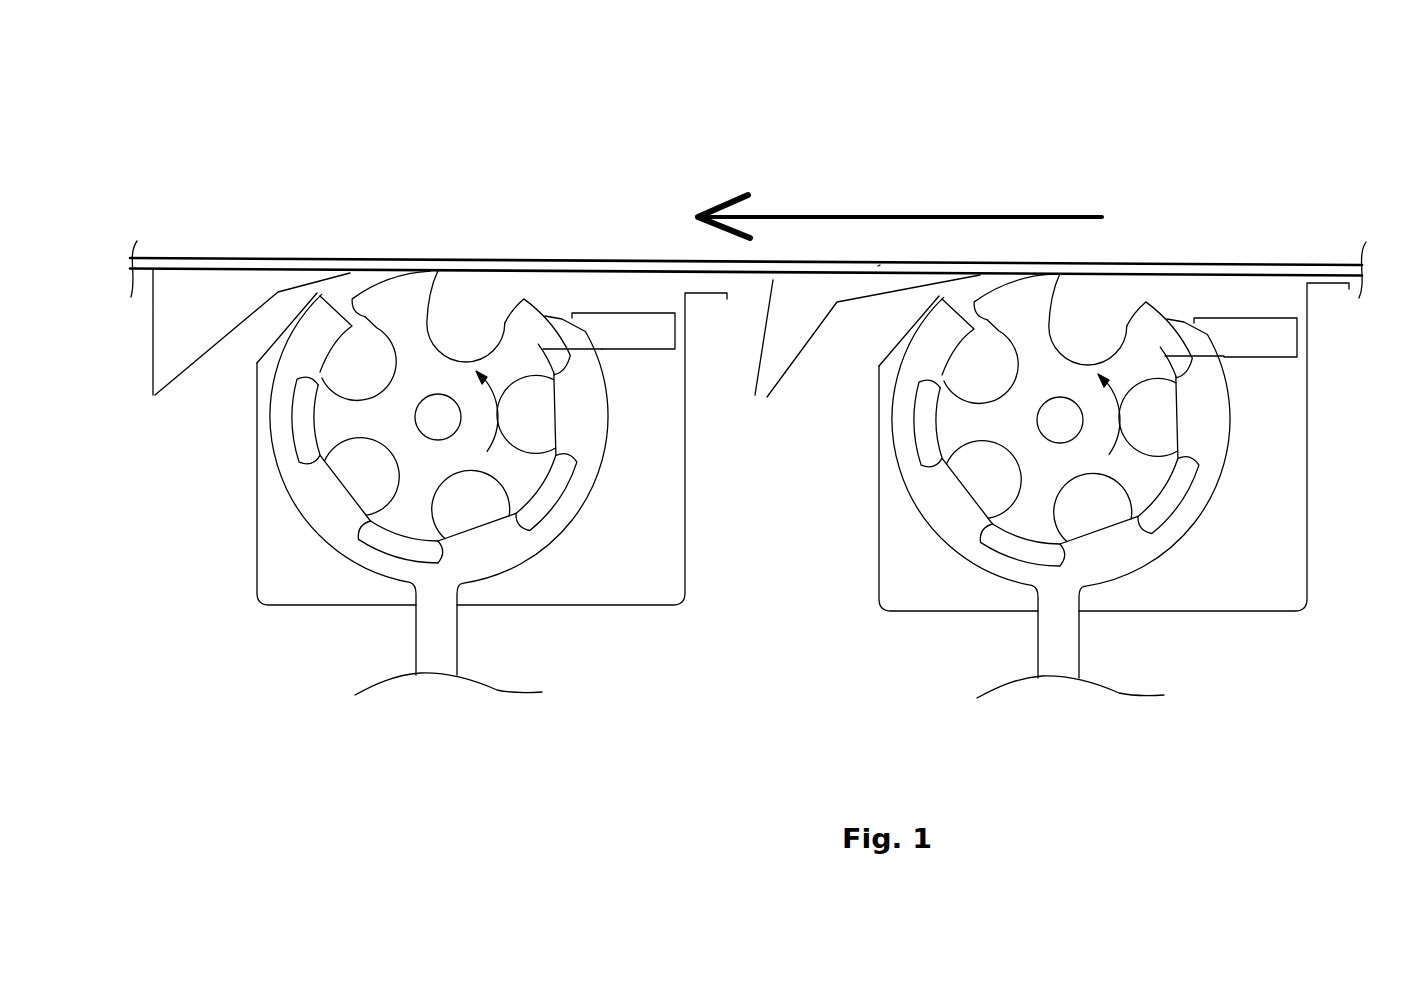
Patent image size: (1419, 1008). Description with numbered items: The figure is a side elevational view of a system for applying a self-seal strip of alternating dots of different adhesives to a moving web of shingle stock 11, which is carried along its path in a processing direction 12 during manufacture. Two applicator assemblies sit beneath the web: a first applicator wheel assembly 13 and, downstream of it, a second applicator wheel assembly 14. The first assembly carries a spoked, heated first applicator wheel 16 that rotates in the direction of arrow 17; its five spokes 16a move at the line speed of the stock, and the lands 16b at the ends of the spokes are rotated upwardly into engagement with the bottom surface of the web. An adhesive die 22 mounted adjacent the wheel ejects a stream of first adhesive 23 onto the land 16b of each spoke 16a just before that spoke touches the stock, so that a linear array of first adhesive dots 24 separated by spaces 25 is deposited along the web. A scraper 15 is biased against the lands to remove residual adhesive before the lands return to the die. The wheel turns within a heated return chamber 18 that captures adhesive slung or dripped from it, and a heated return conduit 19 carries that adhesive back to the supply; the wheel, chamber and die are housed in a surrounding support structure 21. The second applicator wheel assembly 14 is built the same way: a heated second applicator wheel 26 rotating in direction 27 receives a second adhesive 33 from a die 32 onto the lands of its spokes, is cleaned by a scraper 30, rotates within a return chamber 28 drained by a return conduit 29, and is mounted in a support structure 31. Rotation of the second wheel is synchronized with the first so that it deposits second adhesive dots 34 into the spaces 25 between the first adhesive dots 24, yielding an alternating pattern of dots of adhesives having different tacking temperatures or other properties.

The web of shingle stock 11 is at (1170, 266).
The processing direction 12 is at (872, 215).
The first applicator wheel assembly 13 is at (1362, 673).
The second applicator wheel assembly 14 is at (251, 640).
The scraper 15 is at (1199, 430).
The first applicator wheel 16 is at (1133, 434).
The spokes 16a is at (1084, 320).
The lands 16b is at (1026, 277).
The arrow 17 is at (1210, 506).
The heated return chamber 18 is at (1097, 519).
The heated return conduit 19 is at (998, 697).
The support structure 21 is at (1049, 494).
The adhesive die 22 is at (1273, 246).
The first adhesive 23 is at (1208, 271).
The first adhesive dots 24 is at (863, 350).
The spaces 25 is at (879, 265).
The second applicator wheel 26 is at (497, 375).
The arrow 27 is at (493, 437).
The return chamber 28 is at (523, 567).
The return conduit 29 is at (425, 648).
The scraper 30 is at (600, 452).
The support structure 31 is at (258, 560).
The die 32 is at (624, 330).
The second adhesive 33 is at (573, 348).
The second adhesive dots 34 is at (242, 348).